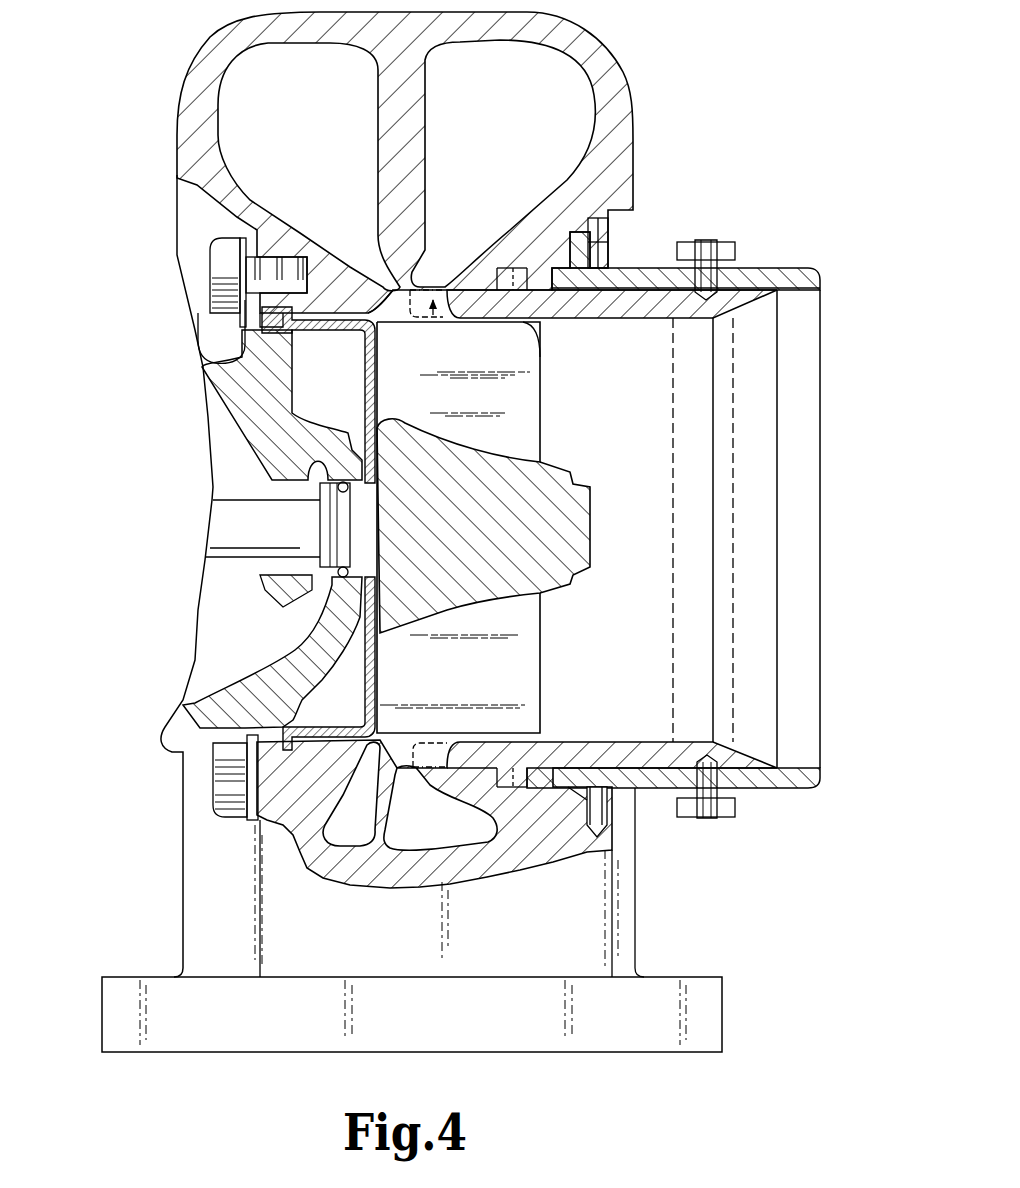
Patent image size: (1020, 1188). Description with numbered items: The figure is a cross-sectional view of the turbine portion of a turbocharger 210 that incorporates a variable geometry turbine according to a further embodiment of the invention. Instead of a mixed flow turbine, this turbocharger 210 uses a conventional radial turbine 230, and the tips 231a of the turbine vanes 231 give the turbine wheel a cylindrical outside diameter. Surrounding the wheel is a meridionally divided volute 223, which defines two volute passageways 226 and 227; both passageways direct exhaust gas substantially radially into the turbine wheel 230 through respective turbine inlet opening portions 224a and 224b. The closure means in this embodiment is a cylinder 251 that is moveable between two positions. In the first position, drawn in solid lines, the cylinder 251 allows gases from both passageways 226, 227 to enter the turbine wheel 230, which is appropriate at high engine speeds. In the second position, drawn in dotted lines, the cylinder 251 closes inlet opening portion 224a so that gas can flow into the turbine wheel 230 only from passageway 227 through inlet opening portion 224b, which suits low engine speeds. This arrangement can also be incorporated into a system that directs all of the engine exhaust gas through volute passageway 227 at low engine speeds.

The turbocharger 210 is at (152, 150).
The meridionally divided volute 223 is at (614, 78).
The turbine inlet opening portion 224a is at (437, 322).
The turbine inlet opening portion 224b is at (385, 310).
The volute passageway 226 is at (505, 128).
The volute passageway 227 is at (320, 126).
The radial turbine 230 is at (652, 450).
The turbine vanes 231 is at (534, 430).
The tips 231a is at (525, 324).
The cylinder 251 is at (647, 312).